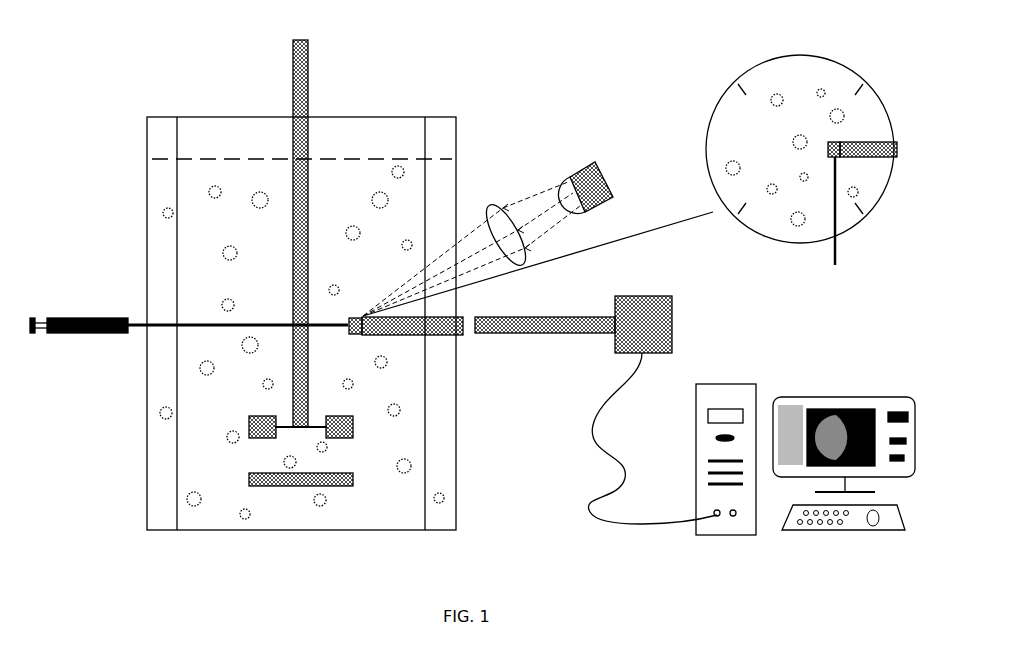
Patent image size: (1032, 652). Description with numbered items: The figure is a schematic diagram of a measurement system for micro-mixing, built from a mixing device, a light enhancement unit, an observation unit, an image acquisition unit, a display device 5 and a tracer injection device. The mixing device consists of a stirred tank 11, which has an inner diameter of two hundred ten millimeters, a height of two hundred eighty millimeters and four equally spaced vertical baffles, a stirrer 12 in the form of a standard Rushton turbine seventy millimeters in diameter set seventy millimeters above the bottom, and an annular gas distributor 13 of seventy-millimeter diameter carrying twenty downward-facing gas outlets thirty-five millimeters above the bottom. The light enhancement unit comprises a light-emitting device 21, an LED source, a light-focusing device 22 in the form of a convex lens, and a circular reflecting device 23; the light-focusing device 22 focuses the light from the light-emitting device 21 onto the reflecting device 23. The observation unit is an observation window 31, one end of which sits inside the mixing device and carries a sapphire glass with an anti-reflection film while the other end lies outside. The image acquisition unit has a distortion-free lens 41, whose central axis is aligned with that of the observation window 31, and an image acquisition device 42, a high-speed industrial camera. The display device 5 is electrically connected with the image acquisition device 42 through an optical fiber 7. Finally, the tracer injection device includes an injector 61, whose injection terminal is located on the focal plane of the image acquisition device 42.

The display device 5 is at (805, 472).
The optical fiber 7 is at (652, 438).
The stirred tank 11 is at (215, 280).
The stirrer 12 is at (301, 225).
The annular gas distributor 13 is at (316, 481).
The light-emitting device 21 is at (585, 176).
The light-focusing device 22 is at (506, 225).
The reflecting device 23 is at (592, 227).
The observation window 31 is at (639, 254).
The distortion-free lens 41 is at (545, 341).
The image acquisition device 42 is at (643, 314).
The injector 61 is at (435, 260).